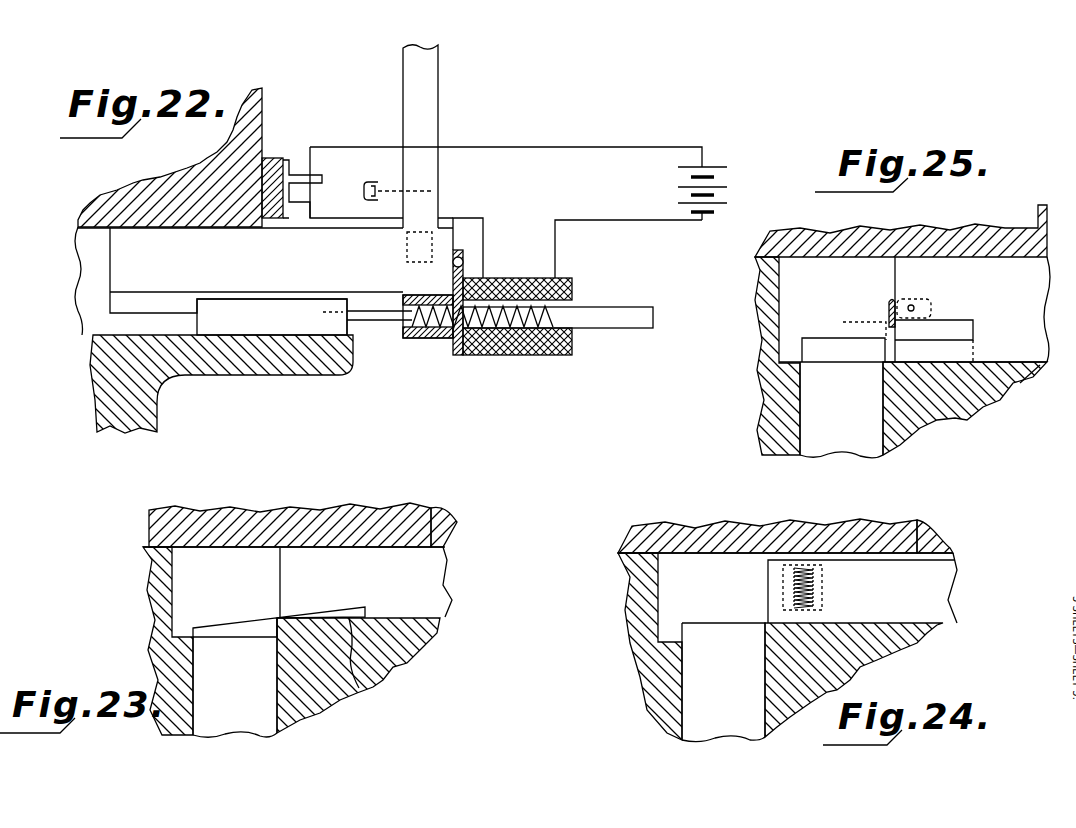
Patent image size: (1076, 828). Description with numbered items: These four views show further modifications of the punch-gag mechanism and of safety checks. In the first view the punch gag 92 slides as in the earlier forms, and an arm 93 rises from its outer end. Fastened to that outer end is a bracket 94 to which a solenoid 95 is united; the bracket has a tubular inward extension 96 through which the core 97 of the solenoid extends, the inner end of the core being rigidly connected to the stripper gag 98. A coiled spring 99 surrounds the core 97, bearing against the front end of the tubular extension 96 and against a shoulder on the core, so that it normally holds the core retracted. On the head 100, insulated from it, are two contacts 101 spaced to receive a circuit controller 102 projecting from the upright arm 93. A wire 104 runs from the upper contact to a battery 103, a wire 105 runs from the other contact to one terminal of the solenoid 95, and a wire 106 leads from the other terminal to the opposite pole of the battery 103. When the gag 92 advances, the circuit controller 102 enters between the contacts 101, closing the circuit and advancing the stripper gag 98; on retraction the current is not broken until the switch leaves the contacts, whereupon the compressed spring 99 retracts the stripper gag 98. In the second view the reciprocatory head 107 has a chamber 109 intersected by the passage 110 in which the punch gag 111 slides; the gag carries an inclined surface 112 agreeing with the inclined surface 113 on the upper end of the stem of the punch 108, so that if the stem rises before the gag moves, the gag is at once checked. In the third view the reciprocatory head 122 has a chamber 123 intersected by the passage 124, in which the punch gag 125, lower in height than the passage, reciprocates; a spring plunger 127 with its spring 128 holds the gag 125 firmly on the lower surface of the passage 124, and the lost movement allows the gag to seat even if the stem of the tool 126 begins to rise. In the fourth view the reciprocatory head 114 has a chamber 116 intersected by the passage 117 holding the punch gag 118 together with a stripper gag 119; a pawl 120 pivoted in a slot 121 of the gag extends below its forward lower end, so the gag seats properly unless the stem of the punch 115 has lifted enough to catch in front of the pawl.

In FIG. 22, the punch gag 92 is at (297, 272).
In FIG. 22, the arm 93 is at (430, 107).
In FIG. 22, the bracket 94 is at (463, 253).
In FIG. 22, the solenoid 95 is at (548, 353).
In FIG. 22, the tubular inward extension 96 is at (423, 337).
In FIG. 22, the core 97 is at (600, 325).
In FIG. 22, the stripper gag 98 is at (238, 323).
In FIG. 22, the coiled spring 99 is at (492, 353).
In FIG. 22, the head 100 is at (263, 123).
In FIG. 22, the contacts 101 is at (328, 208).
In FIG. 22, the circuit controller 102 is at (383, 173).
In FIG. 22, the battery 103 is at (727, 167).
In FIG. 22, the wire 104 is at (588, 147).
In FIG. 22, the wire 105 is at (483, 248).
In FIG. 22, the wire 106 is at (555, 256).
In FIG. 23, the reciprocatory head 107 is at (413, 510).
In FIG. 23, the stem of the punch 108 is at (253, 717).
In FIG. 23, the chamber 109 is at (187, 597).
In FIG. 23, the passage 110 is at (455, 521).
In FIG. 23, the punch gag 111 is at (440, 585).
In FIG. 23, the inclined surface 112 is at (367, 693).
In FIG. 23, the inclined surface 113 is at (240, 623).
In FIG. 25, the reciprocatory head 114 is at (968, 228).
In FIG. 25, the stem of the punch 115 is at (837, 440).
In FIG. 25, the chamber 116 is at (790, 312).
In FIG. 25, the passage 117 is at (990, 363).
In FIG. 25, the punch gag 118 is at (1020, 378).
In FIG. 25, the stripper gag 119 is at (930, 355).
In FIG. 25, the pawl 120 is at (889, 320).
In FIG. 25, the slot 121 is at (925, 298).
In FIG. 24, the reciprocatory head 122 is at (693, 528).
In FIG. 24, the chamber 123 is at (672, 597).
In FIG. 24, the passage 124 is at (947, 548).
In FIG. 24, the punch gag 125 is at (943, 595).
In FIG. 24, the stem of the tool 126 is at (703, 720).
In FIG. 24, the spring plunger 127 is at (823, 577).
In FIG. 24, the spring 128 is at (823, 598).